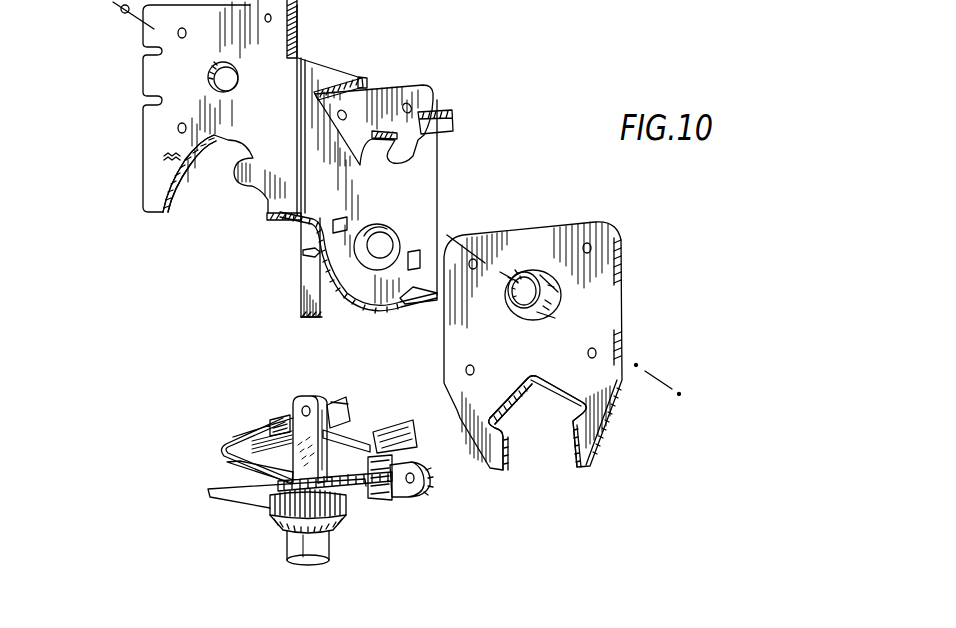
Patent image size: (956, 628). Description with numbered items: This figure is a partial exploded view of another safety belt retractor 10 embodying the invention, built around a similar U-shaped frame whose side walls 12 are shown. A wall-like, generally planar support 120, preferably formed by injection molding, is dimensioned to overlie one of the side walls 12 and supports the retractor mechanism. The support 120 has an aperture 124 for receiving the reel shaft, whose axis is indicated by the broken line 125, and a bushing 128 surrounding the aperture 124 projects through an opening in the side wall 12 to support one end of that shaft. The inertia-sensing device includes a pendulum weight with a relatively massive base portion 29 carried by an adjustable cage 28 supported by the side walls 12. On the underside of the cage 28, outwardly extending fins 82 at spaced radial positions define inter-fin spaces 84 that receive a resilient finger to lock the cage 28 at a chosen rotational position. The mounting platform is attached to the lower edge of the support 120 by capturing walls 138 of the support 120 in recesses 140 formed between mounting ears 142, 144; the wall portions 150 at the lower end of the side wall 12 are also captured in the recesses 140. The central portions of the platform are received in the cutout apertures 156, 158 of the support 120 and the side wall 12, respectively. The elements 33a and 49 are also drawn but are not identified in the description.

The seat belt retractor 10 is at (401, 79).
The side wall 12 is at (150, 222).
The adjustable cage 28 is at (349, 521).
The base portion 29 is at (327, 554).
The spring 33a is at (214, 447).
The support plate 49 is at (240, 477).
The fins 82 is at (282, 532).
The inter-fin spaces 84 is at (272, 508).
The support 120 is at (600, 292).
The aperture 124 is at (522, 273).
The broken line 125 is at (123, 12).
The bushing 128 is at (549, 321).
The walls 138 is at (577, 470).
The recesses 140 is at (400, 478).
The mounting ear 142 is at (430, 478).
The mounting ear 144 is at (373, 500).
The wall portions 150 is at (263, 190).
The cutout aperture 156 is at (547, 422).
The cutout aperture 158 is at (330, 292).